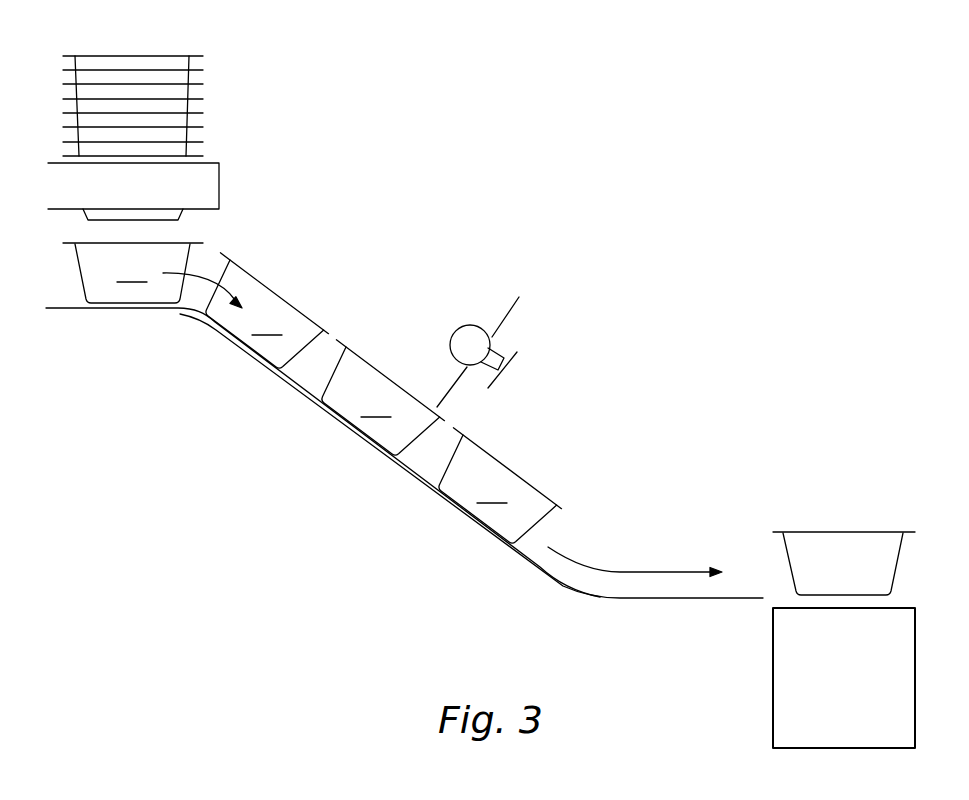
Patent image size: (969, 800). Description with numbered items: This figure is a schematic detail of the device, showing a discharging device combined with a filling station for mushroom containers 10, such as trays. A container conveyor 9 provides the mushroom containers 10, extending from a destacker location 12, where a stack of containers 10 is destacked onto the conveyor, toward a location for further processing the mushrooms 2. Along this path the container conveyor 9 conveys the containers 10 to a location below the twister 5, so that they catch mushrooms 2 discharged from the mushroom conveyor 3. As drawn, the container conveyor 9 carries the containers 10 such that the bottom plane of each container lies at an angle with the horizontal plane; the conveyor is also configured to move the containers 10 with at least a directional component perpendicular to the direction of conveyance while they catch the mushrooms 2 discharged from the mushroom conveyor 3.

The mushrooms 2 is at (458, 336).
The mushroom conveyor 3 is at (515, 300).
The twister 5 is at (530, 333).
The container conveyor 9 is at (297, 393).
The mushroom containers 10 is at (203, 70).
The destacker location 12 is at (207, 187).